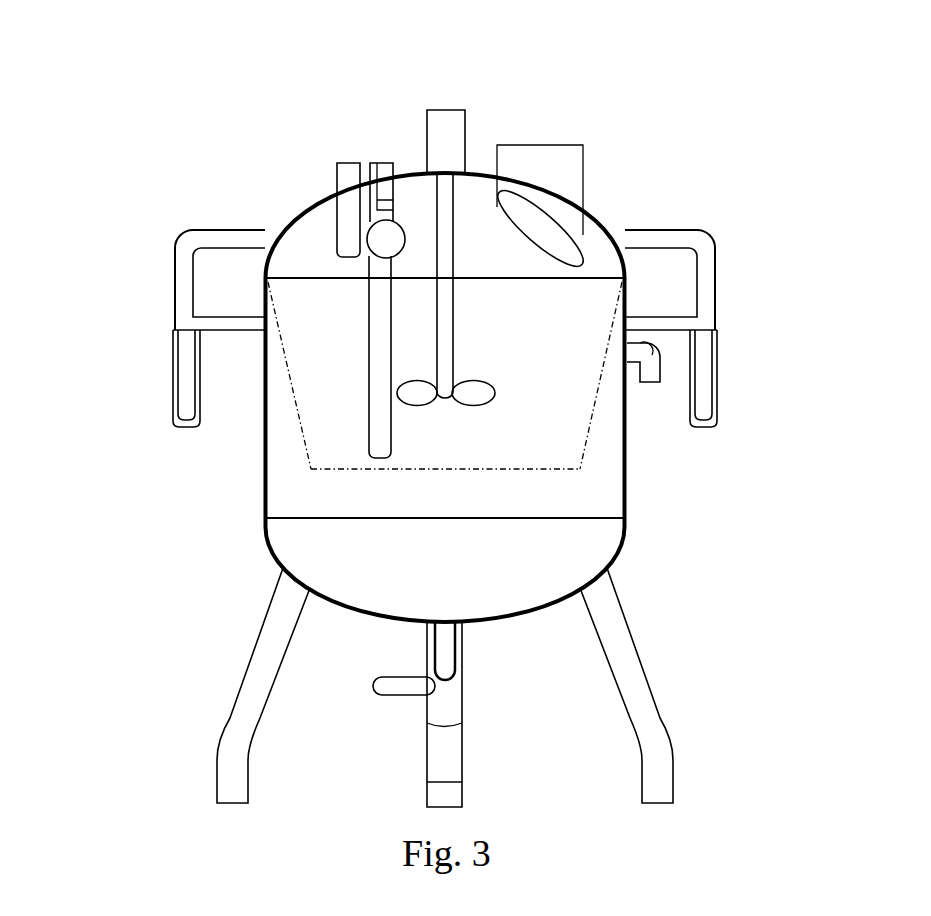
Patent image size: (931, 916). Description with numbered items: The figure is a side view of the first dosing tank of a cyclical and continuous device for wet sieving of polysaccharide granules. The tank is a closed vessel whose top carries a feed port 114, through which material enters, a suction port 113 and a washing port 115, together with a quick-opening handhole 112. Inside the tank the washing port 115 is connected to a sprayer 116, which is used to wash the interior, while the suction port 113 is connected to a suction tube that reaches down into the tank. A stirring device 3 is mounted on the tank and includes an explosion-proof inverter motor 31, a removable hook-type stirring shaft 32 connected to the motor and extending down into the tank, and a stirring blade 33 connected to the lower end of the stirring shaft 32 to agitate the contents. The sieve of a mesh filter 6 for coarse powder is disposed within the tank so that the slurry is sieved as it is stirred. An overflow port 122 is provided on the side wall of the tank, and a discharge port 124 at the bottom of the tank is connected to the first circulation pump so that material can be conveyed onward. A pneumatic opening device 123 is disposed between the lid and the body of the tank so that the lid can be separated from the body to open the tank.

The stirring device 3 is at (710, 58).
The explosion-proof inverter motor 31 is at (467, 117).
The stirring shaft 32 is at (457, 237).
The stirring blade 33 is at (482, 382).
The mesh filter for coarse powder 6 is at (303, 446).
The quick-opening handhole 112 is at (543, 147).
The suction port 113 is at (370, 373).
The feed port 114 is at (340, 212).
The washing port 115 is at (392, 165).
The sprayer 116 is at (367, 215).
The overflow port 122 is at (662, 372).
The pneumatic opening device 123 is at (176, 239).
The discharge port 124 is at (403, 673).